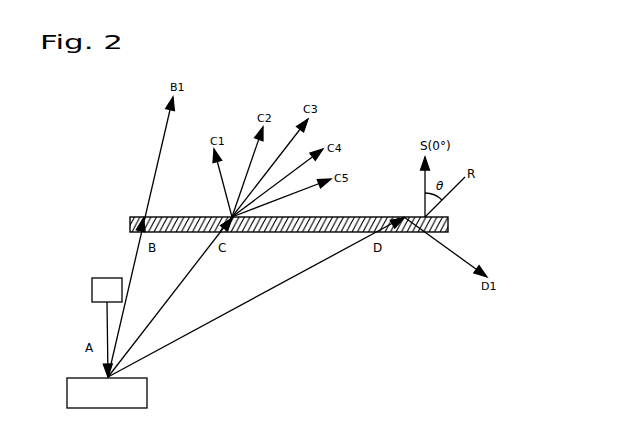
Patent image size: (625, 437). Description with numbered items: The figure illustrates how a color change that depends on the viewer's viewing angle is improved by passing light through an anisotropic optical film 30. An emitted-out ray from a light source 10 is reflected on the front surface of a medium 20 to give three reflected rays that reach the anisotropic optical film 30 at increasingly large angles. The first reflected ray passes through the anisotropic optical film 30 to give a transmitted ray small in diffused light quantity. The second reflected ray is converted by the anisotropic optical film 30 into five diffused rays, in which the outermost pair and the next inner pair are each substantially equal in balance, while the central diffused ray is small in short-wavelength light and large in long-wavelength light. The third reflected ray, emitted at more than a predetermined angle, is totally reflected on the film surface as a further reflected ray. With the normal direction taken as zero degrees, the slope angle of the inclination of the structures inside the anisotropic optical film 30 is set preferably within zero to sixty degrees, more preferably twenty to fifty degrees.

The light source 10 is at (100, 286).
The medium 20 is at (138, 392).
The anisotropic optical film 30 is at (448, 218).